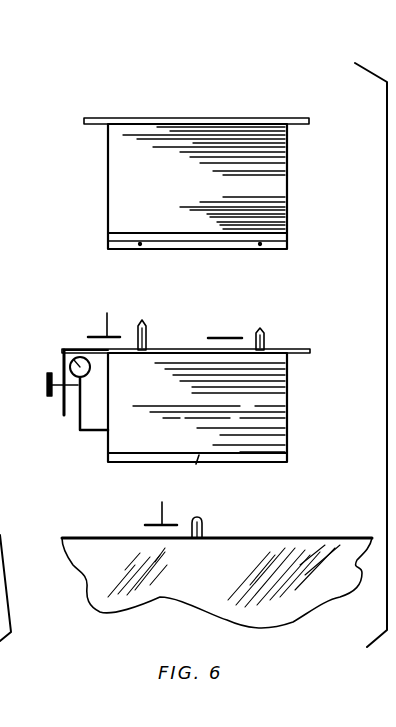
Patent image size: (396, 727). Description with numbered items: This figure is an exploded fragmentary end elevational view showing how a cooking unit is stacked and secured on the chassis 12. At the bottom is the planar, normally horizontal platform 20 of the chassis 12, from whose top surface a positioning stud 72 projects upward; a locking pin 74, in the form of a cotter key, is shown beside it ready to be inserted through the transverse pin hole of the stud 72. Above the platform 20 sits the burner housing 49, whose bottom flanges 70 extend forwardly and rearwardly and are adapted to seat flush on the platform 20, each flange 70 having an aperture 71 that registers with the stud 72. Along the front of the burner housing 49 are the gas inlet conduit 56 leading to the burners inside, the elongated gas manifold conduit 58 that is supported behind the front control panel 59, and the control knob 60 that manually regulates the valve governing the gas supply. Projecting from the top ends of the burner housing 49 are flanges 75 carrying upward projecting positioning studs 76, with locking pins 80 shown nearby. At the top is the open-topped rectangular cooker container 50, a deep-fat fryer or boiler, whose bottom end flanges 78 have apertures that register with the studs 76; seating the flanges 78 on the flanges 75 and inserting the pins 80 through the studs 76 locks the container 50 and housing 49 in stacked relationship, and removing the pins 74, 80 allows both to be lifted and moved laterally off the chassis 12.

The chassis 12 is at (217, 570).
The platform 20 is at (217, 525).
The burner housing 49 is at (174, 389).
The cooker container 50 is at (206, 167).
The gas inlet conduit 56 is at (78, 430).
The gas manifold conduit 58 is at (66, 365).
The front control panel 59 is at (49, 357).
The control knob 60 is at (46, 385).
The flange 70 is at (212, 420).
The aperture 71 is at (181, 474).
The positioning stud 72 is at (218, 520).
The locking pin 74 is at (162, 502).
The top flange 75 is at (200, 371).
The positioning stud 76 is at (145, 318).
The bottom end flange 78 is at (218, 234).
The locking pin 80 is at (107, 313).